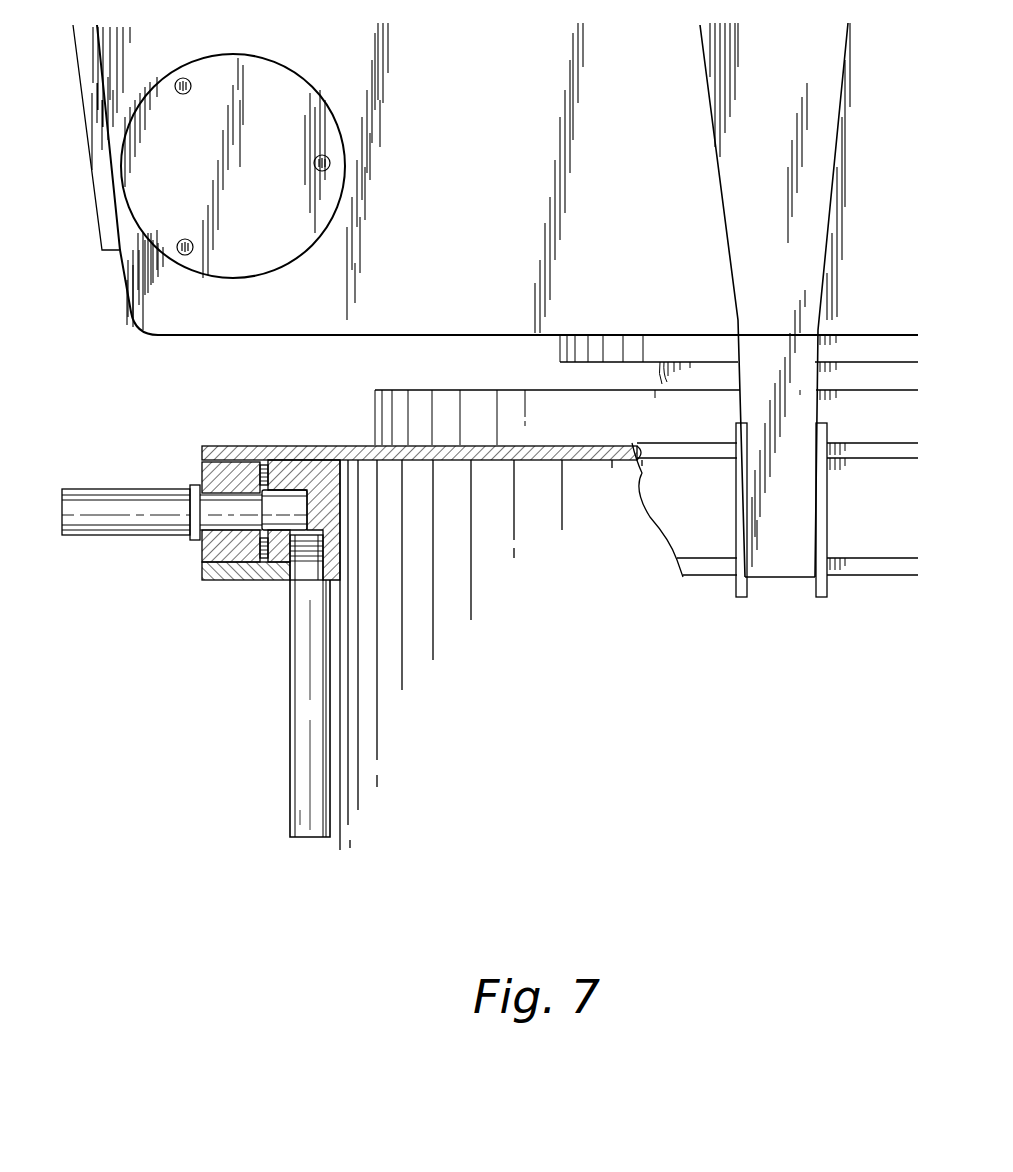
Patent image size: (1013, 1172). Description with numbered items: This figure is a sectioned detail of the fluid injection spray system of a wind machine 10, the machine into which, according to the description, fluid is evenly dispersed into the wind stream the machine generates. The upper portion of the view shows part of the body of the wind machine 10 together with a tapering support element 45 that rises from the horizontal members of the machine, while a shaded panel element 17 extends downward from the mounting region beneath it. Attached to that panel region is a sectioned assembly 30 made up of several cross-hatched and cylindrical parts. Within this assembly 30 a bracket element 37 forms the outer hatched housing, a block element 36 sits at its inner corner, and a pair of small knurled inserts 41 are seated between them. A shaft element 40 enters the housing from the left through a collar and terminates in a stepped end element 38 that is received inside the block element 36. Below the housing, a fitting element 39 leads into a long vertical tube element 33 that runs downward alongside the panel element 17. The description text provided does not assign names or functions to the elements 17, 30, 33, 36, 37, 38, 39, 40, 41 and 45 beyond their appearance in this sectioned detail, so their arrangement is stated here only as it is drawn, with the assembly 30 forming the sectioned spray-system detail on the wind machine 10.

The wind machine 10 is at (128, 342).
The side panel 17 is at (488, 658).
The stop assembly 30 is at (247, 424).
The tube 33 is at (305, 748).
The housing block 36 is at (310, 465).
The mounting bracket 37 is at (232, 578).
The shaft end 38 is at (288, 502).
The fitting 39 is at (305, 582).
The shaft 40 is at (197, 502).
The bushing 41 is at (258, 480).
The support column 45 is at (778, 222).